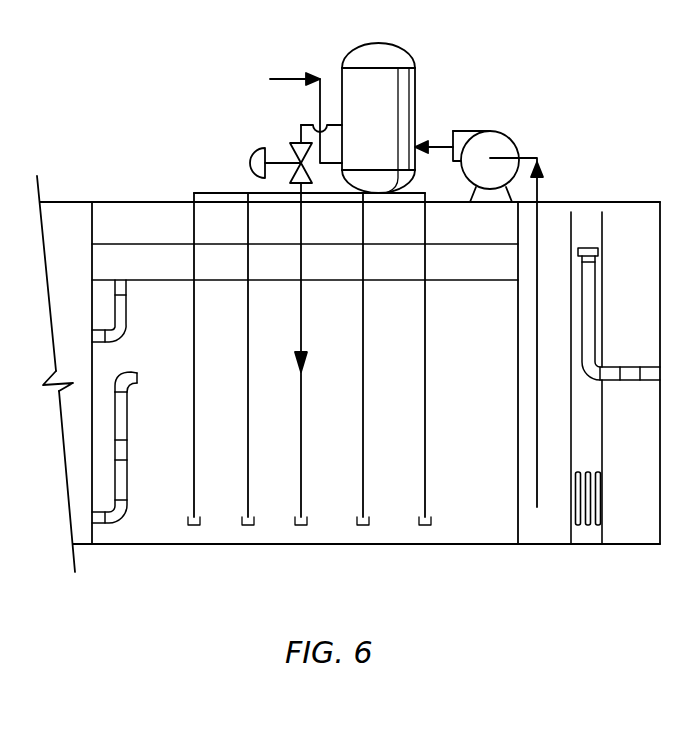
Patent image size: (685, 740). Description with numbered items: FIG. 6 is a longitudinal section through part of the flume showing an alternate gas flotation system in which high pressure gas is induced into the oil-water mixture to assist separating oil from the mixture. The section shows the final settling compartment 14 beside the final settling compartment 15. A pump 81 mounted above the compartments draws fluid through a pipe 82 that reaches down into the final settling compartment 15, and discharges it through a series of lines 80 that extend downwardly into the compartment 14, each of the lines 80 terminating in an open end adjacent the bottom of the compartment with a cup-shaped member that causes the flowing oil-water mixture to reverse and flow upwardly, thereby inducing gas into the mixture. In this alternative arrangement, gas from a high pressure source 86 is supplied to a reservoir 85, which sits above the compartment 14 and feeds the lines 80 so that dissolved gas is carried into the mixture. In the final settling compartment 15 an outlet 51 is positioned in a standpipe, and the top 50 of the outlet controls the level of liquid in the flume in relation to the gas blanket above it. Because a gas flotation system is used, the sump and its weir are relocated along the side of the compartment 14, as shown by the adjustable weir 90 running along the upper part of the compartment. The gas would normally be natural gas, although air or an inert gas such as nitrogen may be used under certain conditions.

The final settling compartment 14 is at (481, 489).
The final settling compartment 15 is at (639, 488).
The top of outlet 50 is at (598, 298).
The outlet 51 is at (628, 381).
The lines 80 is at (248, 323).
The pump 81 is at (482, 132).
The pipe 82 is at (525, 158).
The reservoir 85 is at (403, 44).
The high pressure source 86 is at (290, 77).
The adjustable weir 90 is at (452, 243).